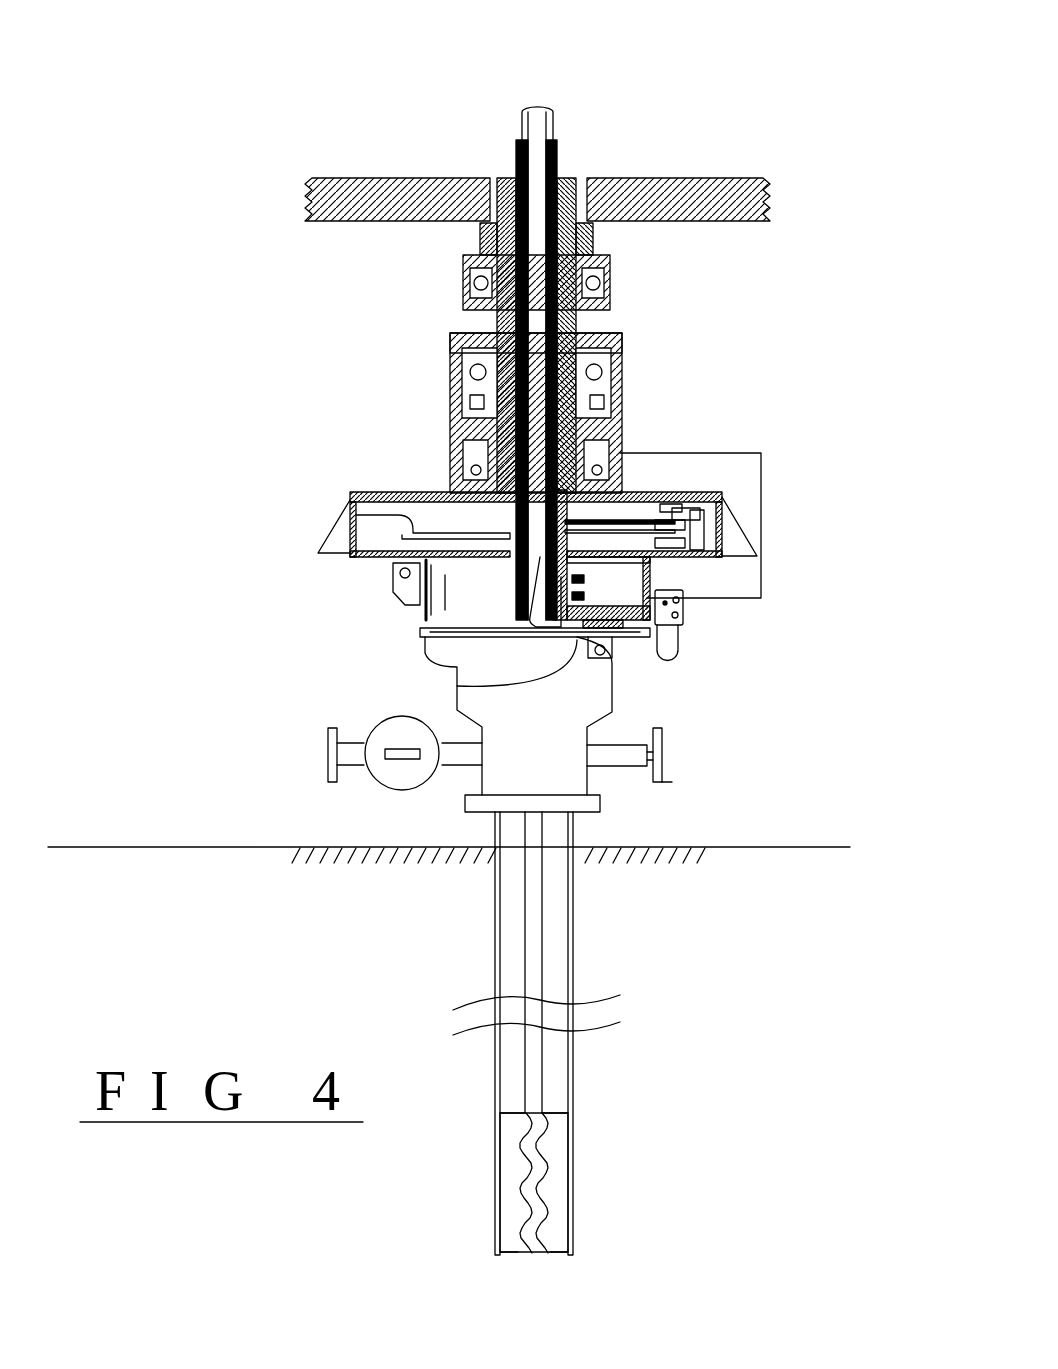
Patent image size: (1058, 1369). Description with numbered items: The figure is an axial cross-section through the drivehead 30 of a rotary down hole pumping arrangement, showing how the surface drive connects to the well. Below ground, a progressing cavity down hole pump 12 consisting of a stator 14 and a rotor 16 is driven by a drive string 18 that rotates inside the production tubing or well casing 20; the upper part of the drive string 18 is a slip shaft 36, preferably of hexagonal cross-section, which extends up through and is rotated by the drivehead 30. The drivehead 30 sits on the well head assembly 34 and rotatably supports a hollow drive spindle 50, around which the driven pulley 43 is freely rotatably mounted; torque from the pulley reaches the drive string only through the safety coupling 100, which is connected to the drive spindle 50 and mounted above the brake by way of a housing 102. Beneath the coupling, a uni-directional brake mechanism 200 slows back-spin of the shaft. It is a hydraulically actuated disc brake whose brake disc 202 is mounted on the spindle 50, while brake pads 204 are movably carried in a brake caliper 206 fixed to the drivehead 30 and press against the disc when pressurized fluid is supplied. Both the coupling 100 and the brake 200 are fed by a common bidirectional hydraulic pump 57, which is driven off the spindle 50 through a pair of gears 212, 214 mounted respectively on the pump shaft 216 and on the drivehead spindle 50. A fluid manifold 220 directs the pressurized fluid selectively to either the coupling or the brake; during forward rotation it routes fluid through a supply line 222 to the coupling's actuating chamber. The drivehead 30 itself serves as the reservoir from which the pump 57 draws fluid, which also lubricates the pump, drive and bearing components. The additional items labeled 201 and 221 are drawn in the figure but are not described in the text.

The progressing cavity down hole pump 12 is at (578, 1118).
The stator 14 is at (555, 1200).
The rotor 16 is at (537, 1145).
The drive string 18 is at (535, 960).
The production tubing or well casing 20 is at (577, 895).
The drivehead 30 is at (497, 593).
The well head assembly 34 is at (585, 718).
The slip shaft 36 is at (553, 110).
The driven pulley 43 is at (633, 178).
The drive spindle 50 is at (557, 148).
The hydraulic pump 57 is at (607, 637).
The safety coupling 100 is at (625, 385).
The housing 102 is at (622, 350).
The brake mechanism 200 is at (703, 500).
The seal housing 201 is at (620, 577).
The brake disc 202 is at (350, 516).
The brake pads 204 is at (662, 527).
The brake caliper 206 is at (690, 532).
The gear 212 is at (650, 635).
The gear 214 is at (457, 686).
The pump shaft 216 is at (623, 637).
The fluid manifold 220 is at (677, 632).
The fitting block 221 is at (673, 613).
The supply line 222 is at (680, 518).